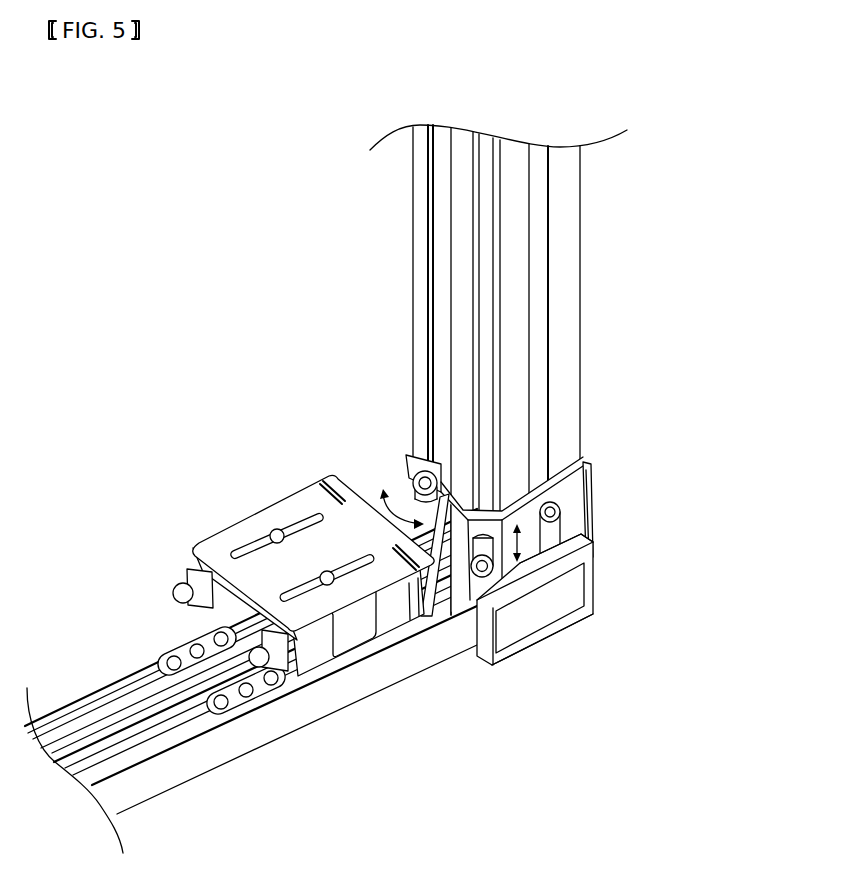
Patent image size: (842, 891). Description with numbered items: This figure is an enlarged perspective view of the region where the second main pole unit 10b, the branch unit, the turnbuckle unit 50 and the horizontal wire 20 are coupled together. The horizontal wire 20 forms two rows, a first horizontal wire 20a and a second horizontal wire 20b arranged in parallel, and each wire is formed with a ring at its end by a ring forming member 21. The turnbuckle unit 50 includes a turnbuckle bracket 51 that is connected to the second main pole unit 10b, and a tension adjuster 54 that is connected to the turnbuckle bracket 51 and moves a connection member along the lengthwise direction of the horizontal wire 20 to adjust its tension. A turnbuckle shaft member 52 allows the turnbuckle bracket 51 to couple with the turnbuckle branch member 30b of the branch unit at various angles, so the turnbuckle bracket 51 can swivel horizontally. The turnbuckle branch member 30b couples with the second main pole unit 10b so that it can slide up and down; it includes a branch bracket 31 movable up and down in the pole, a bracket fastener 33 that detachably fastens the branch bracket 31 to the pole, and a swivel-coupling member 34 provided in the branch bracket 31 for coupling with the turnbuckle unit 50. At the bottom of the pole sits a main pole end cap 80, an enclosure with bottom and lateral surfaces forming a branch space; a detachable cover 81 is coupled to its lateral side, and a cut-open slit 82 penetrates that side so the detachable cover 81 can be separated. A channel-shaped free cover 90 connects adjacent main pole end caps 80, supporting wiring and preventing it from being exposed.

The second main pole unit 10b is at (602, 282).
The turnbuckle branch member 30b is at (600, 465).
The branch bracket 31 is at (595, 496).
The swivel-coupling member 34 is at (595, 533).
The bracket fastener 33 is at (533, 580).
The turnbuckle shaft member 52 is at (416, 478).
The turnbuckle unit 50 is at (303, 534).
The turnbuckle bracket 51 is at (344, 612).
The tension adjuster 54 is at (280, 535).
The horizontal wire 20 is at (251, 681).
The first horizontal wire 20a is at (140, 700).
The second horizontal wire 20b is at (87, 707).
The ring forming member 21 is at (216, 696).
The main pole end cap 80 is at (569, 624).
The detachable cover 81 is at (565, 603).
The cut-open slit 82 is at (518, 652).
The free cover 90 is at (264, 768).